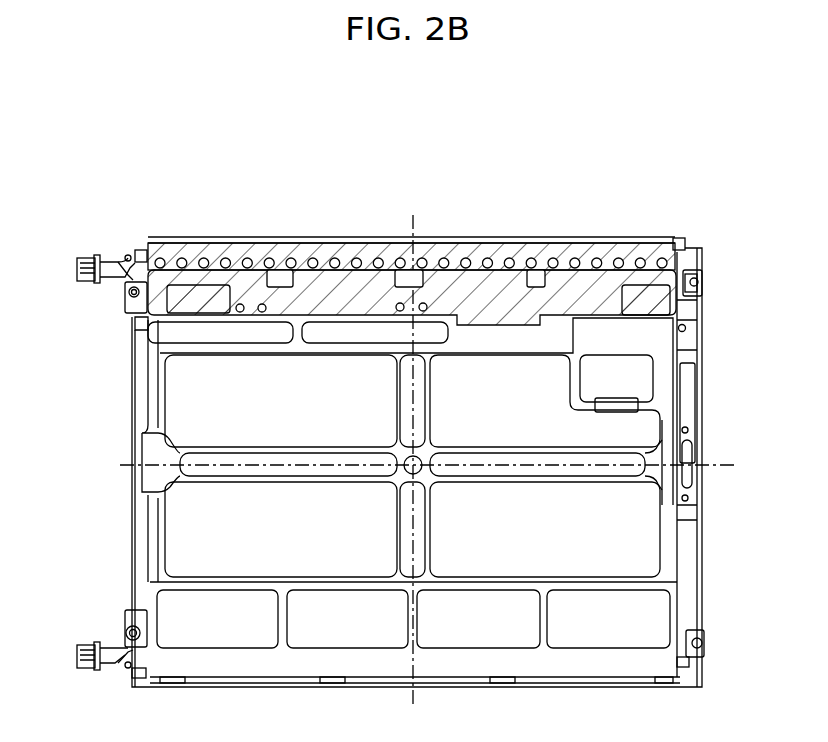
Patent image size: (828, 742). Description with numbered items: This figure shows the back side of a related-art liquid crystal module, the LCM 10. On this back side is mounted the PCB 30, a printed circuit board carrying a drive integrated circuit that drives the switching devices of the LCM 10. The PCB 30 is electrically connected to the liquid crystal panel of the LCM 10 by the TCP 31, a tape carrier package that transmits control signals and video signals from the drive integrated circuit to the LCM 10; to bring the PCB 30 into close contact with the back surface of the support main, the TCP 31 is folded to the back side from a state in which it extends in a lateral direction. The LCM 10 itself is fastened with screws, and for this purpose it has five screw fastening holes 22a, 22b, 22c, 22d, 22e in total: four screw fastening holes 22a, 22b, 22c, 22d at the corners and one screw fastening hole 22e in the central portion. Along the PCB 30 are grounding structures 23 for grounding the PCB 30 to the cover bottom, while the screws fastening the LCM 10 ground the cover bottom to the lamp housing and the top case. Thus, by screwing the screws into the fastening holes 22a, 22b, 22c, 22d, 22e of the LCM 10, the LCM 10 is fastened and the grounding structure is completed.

The LCM 10 is at (549, 231).
The screw fastening hole 22a is at (121, 296).
The screw fastening hole 22b is at (707, 280).
The screw fastening hole 22c is at (707, 641).
The screw fastening hole 22d is at (121, 631).
The screw fastening hole 22e is at (420, 476).
The grounding structures 23 is at (518, 238).
The PCB 30 is at (345, 290).
The TCP 31 is at (645, 237).